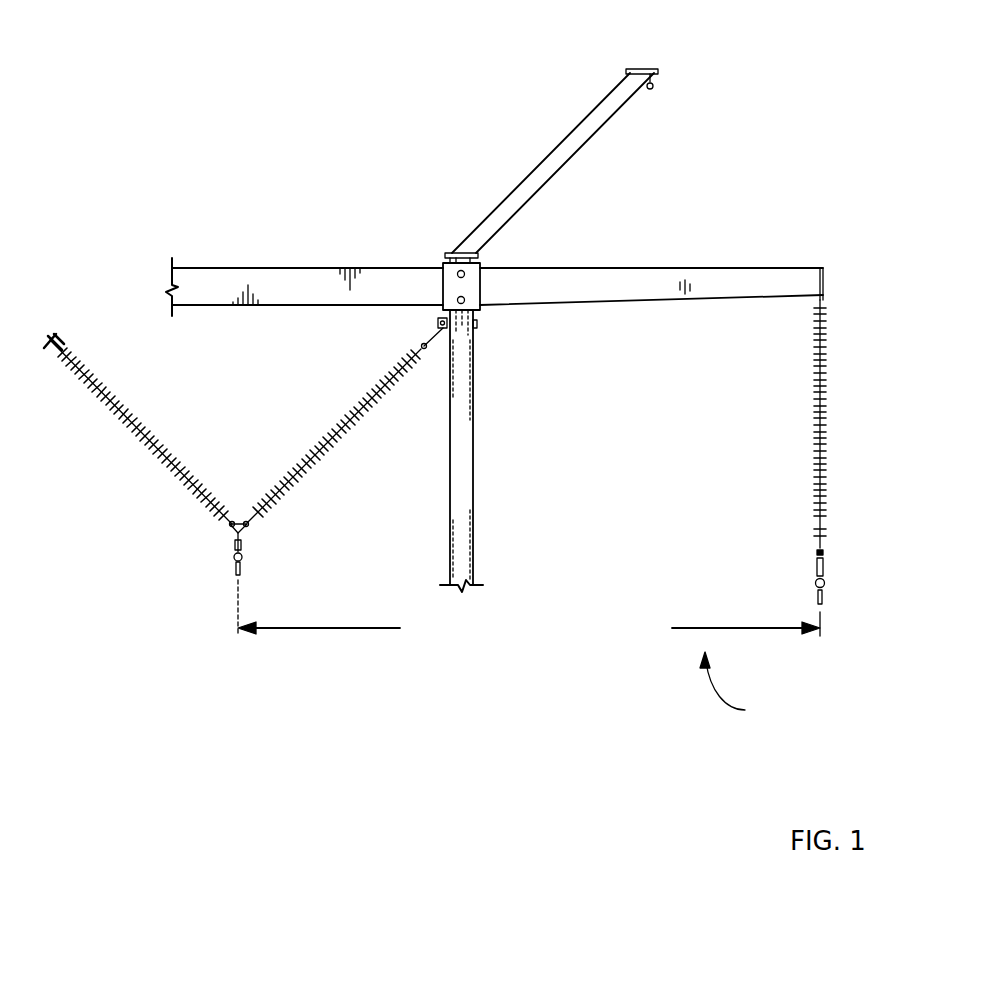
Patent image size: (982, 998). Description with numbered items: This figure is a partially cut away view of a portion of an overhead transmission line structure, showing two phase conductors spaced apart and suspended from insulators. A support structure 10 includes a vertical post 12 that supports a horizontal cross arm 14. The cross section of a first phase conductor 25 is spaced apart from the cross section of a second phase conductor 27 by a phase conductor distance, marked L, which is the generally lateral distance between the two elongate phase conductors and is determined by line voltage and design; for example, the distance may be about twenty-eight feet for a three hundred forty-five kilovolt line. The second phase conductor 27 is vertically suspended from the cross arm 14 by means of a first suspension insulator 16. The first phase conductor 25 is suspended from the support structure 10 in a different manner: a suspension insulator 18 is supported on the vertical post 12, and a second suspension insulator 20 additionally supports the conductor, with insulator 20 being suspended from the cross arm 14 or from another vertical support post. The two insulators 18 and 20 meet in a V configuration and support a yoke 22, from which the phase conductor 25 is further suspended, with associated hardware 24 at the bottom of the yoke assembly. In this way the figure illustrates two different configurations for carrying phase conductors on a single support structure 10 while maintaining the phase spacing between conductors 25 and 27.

The support structure 10 is at (281, 207).
The vertical post 12 is at (452, 445).
The horizontal cross arm 14 is at (566, 268).
The first suspension insulator 16 is at (815, 380).
The suspension insulator 18 is at (318, 440).
The second suspension insulator 20 is at (135, 432).
The yoke 22 is at (235, 534).
The conductor clamp 24 is at (238, 578).
The first phase conductor 25 is at (236, 562).
The second phase conductor 27 is at (814, 583).